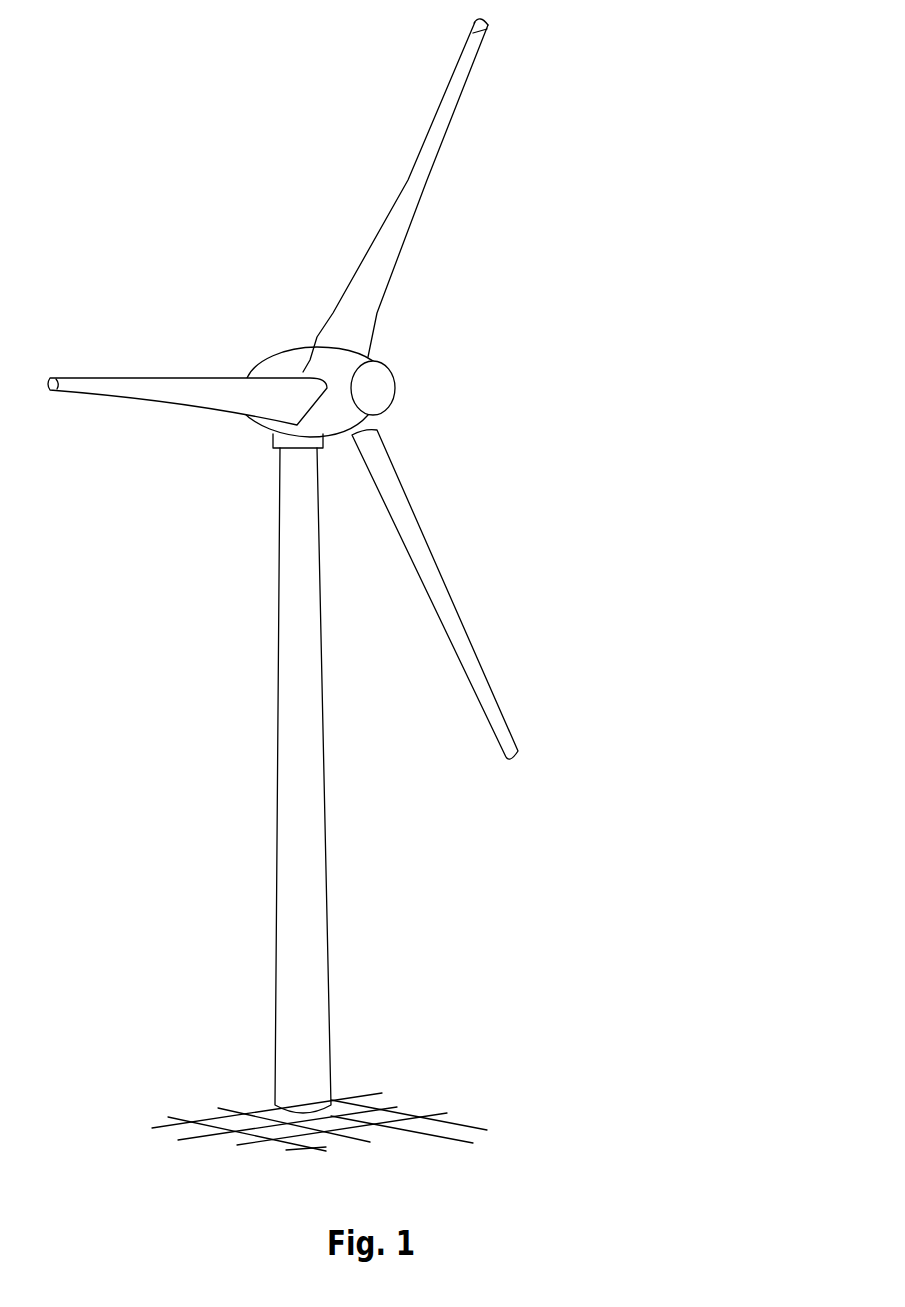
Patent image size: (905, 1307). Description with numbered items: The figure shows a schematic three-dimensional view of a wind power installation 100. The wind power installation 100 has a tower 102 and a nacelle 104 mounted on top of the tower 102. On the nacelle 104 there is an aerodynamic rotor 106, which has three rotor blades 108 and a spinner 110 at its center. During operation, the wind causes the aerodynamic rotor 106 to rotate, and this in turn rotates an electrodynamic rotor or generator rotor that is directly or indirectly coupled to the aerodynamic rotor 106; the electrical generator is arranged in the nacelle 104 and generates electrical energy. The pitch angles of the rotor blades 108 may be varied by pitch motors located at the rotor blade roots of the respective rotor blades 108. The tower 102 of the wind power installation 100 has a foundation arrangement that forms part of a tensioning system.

The wind power installation 100 is at (232, 510).
The tower 102 is at (308, 882).
The nacelle 104 is at (292, 365).
The aerodynamic rotor 106 is at (522, 268).
The rotor blades 108 is at (433, 147).
The spinner 110 is at (390, 385).